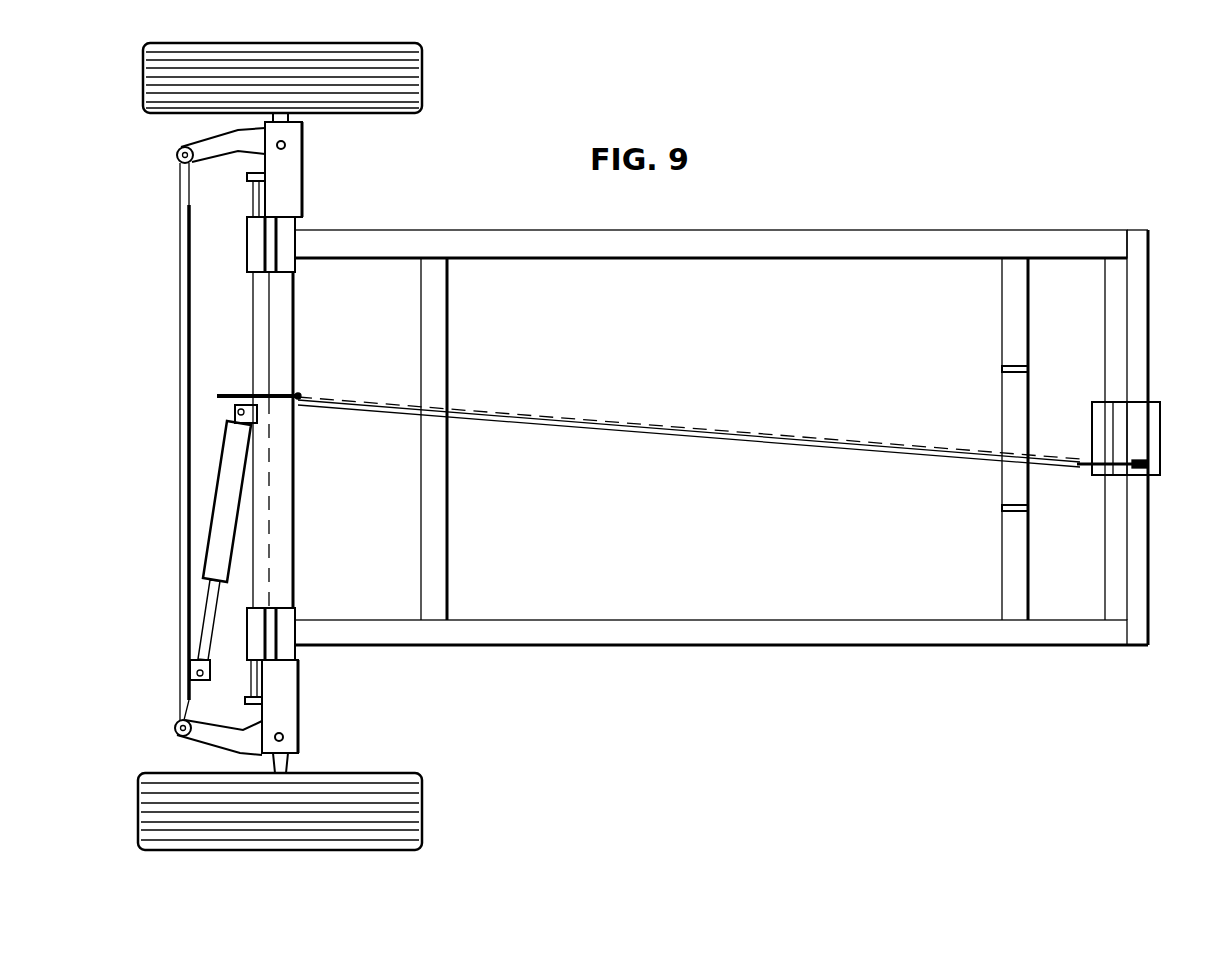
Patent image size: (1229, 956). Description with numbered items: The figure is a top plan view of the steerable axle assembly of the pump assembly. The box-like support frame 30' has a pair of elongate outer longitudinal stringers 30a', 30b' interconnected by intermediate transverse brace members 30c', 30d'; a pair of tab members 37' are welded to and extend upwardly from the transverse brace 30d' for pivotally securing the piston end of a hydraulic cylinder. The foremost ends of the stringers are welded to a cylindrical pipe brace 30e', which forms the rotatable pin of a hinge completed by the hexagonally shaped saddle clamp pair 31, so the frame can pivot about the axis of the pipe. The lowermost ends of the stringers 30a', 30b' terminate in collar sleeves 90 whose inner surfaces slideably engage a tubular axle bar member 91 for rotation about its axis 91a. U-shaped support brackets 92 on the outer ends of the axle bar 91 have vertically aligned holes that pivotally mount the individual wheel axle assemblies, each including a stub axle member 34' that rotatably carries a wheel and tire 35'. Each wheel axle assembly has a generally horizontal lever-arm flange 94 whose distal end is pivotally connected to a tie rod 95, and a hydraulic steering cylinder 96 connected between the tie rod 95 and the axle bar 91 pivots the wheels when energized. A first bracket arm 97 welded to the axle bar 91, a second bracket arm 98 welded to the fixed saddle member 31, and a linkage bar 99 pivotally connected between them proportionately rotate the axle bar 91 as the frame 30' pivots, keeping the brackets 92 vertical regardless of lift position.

The box-like support frame 30' is at (911, 471).
The longitudinal axle assembly stringer 30a' is at (721, 652).
The longitudinal axle assembly stringer 30b' is at (711, 232).
The intermediate transverse brace member 30c' is at (467, 439).
The intermediate transverse support brace 30d' is at (989, 439).
The cylindrical pipe brace 30e' is at (1172, 437).
The saddle clamp pair 31 is at (1146, 412).
The stub axle member 34' is at (307, 443).
The wheel and tire 35' is at (303, 446).
The tab member 37' is at (989, 446).
The collar sleeve 90 is at (294, 268).
The tubular axle bar member 91 is at (283, 505).
The axis of the tubular axle bar member 91a is at (273, 356).
The U-shaped support bracket 92 is at (294, 190).
The lever-arm flange 94 is at (207, 145).
The tie rod 95 is at (178, 410).
The hydraulic steering cylinder 96 is at (243, 458).
The first bracket arm 97 is at (228, 393).
The second bracket arm 98 is at (1150, 467).
The linkage bar 99 is at (783, 444).